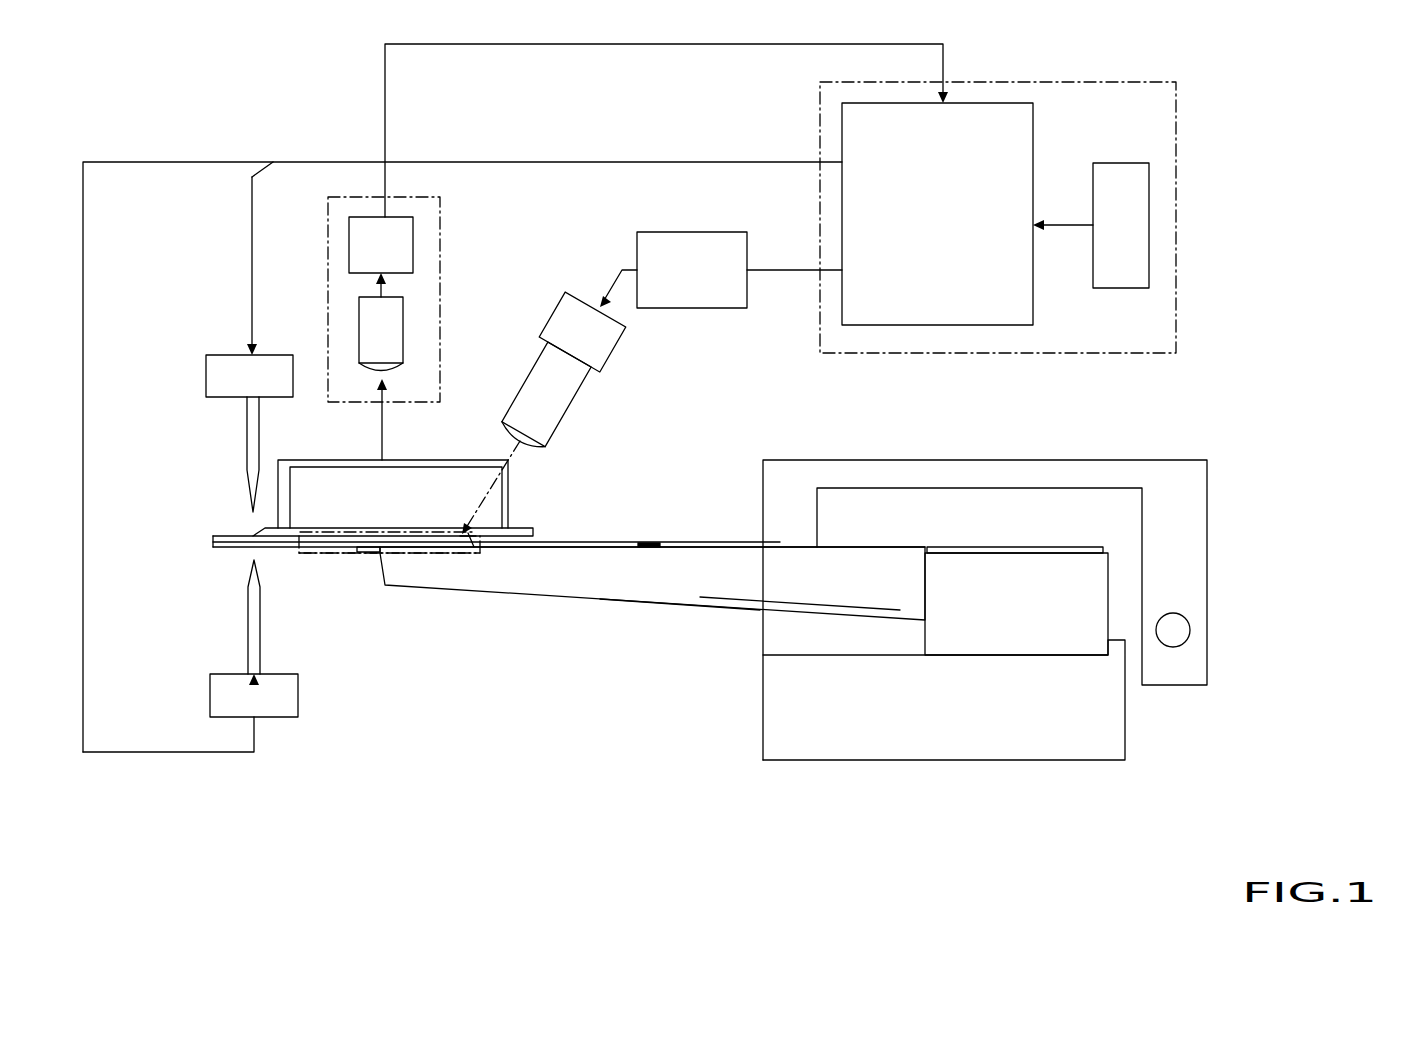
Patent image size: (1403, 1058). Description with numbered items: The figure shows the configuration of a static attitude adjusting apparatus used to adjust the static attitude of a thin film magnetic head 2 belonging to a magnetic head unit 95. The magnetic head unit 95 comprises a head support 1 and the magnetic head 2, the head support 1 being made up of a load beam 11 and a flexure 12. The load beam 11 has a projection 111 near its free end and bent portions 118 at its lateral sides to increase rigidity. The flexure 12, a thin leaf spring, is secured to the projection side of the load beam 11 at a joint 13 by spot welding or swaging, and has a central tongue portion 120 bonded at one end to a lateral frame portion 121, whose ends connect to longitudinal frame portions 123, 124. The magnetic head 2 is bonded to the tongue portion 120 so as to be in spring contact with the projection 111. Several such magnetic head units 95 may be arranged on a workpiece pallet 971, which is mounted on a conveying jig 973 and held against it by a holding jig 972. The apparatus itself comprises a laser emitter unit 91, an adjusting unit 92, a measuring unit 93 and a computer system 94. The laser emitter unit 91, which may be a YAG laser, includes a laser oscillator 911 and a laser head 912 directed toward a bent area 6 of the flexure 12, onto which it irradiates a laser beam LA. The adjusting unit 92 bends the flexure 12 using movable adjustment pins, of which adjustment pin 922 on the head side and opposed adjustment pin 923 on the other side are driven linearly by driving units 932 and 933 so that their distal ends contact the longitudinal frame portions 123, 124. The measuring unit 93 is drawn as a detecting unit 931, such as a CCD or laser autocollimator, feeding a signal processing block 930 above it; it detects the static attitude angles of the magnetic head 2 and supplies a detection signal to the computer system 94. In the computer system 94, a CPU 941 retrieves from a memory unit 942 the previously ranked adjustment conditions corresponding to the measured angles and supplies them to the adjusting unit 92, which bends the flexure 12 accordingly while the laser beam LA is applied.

The head support 1 is at (857, 544).
The thin film magnetic head 2 is at (410, 460).
The bent area 6 is at (472, 537).
The load beam 11 is at (552, 599).
The flexure 12 is at (540, 531).
The joint 13 is at (645, 540).
The laser emitter unit 91 is at (618, 331).
The laser oscillator 911 is at (688, 310).
The laser head 912 is at (557, 382).
The adjusting unit 92 is at (213, 530).
The adjustment pin 922 is at (250, 445).
The adjustment pin 923 is at (250, 637).
The measuring unit 93 is at (328, 210).
The camera 930 is at (402, 250).
The detecting unit 931 is at (395, 345).
The driving unit 932 is at (215, 362).
The driving unit 933 is at (290, 708).
The computer system 94 is at (1030, 82).
The CPU 941 is at (1028, 287).
The memory unit 942 is at (1112, 172).
The magnetic head unit 95 is at (638, 620).
The projection 111 is at (380, 536).
The bent portion 118 is at (706, 598).
The tongue portion 120 is at (468, 533).
The lateral frame portion 121 is at (232, 535).
The longitudinal frame portion 123 is at (310, 545).
The longitudinal frame portion 124 is at (310, 545).
The workpiece pallet 971 is at (987, 583).
The holding jig 972 is at (1047, 468).
The conveying jig 973 is at (1098, 733).
The laser beam LA is at (505, 447).